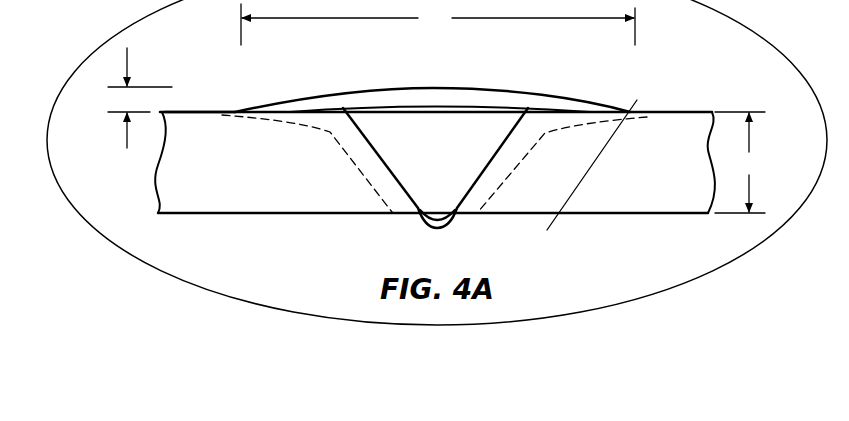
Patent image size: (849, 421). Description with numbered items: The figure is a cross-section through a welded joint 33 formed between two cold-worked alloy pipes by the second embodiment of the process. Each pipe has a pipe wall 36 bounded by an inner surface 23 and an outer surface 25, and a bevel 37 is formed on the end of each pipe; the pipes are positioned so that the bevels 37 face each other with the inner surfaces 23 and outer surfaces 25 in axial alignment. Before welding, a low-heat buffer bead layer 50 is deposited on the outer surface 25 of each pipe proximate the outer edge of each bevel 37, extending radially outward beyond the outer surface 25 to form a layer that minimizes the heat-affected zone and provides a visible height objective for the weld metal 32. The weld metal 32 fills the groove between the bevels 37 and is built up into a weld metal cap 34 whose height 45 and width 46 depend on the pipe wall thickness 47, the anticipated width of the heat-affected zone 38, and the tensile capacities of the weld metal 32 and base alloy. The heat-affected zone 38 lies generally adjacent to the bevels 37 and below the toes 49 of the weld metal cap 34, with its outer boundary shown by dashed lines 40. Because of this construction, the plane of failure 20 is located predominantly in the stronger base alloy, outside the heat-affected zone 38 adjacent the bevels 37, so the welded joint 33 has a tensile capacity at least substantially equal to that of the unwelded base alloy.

The plane of failure 20 is at (637, 100).
The inner surface 23 is at (197, 213).
The outer surface 25 is at (203, 112).
The weld metal 32 is at (436, 184).
The welded joint 33 is at (436, 64).
The weld metal cap 34 is at (450, 98).
The pipe wall 36 is at (247, 228).
The bevel 37 is at (368, 135).
The heat-affected zone 38 is at (350, 154).
The dashed lines 40 is at (368, 180).
The height of the weld metal cap 45 is at (140, 98).
The width of the weld metal cap 46 is at (438, 24).
The pipe wall thickness 47 is at (740, 162).
The toes of the weld metal cap 49 is at (289, 114).
The buffer bead layer 50 is at (590, 108).